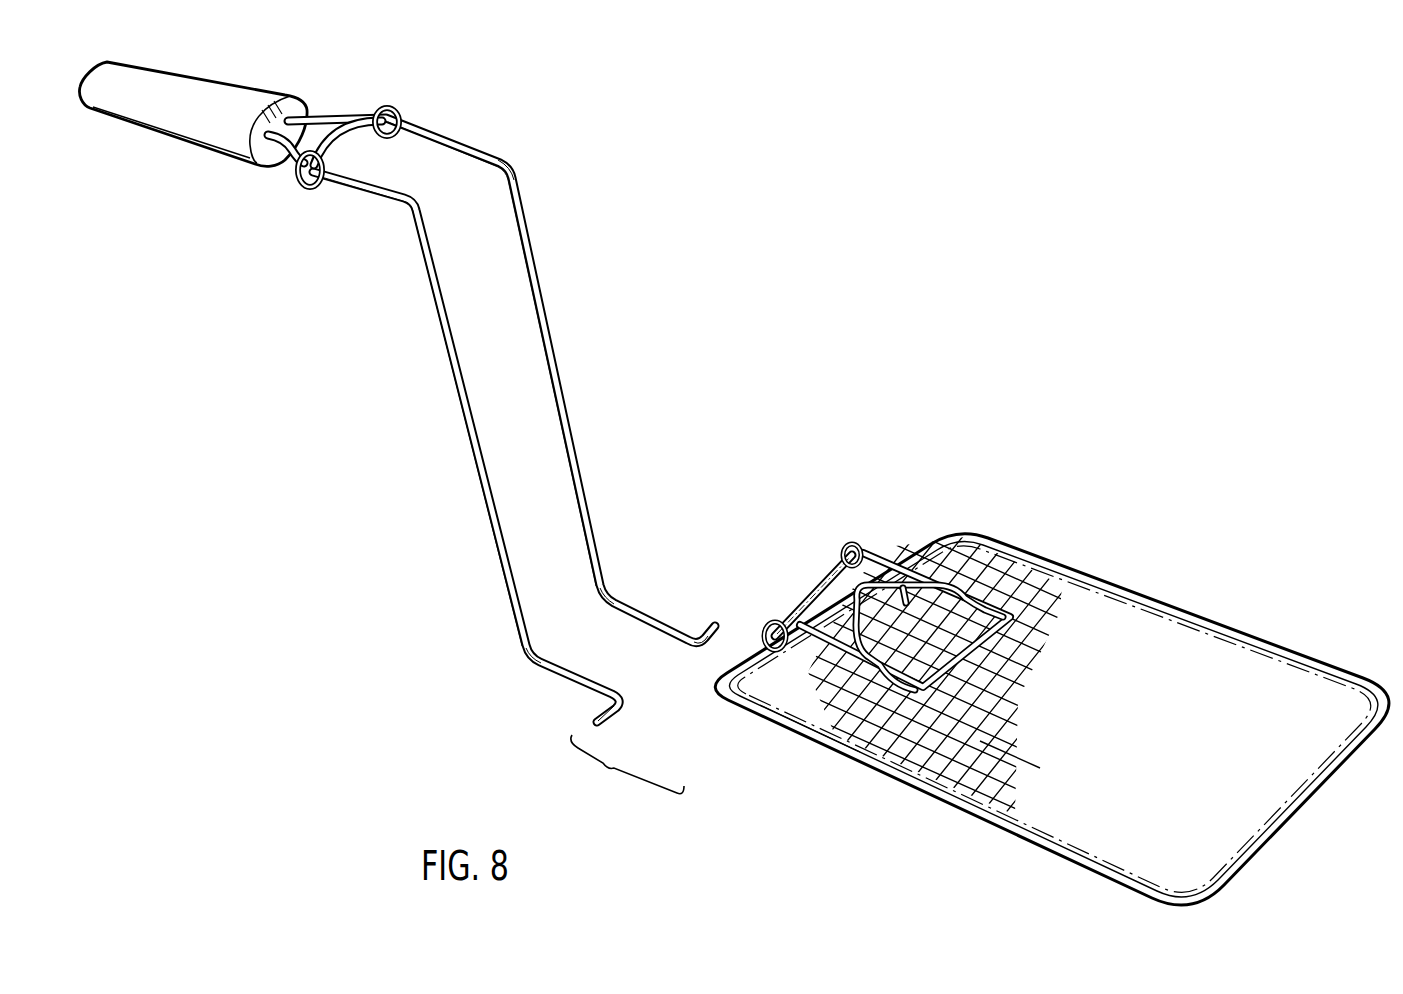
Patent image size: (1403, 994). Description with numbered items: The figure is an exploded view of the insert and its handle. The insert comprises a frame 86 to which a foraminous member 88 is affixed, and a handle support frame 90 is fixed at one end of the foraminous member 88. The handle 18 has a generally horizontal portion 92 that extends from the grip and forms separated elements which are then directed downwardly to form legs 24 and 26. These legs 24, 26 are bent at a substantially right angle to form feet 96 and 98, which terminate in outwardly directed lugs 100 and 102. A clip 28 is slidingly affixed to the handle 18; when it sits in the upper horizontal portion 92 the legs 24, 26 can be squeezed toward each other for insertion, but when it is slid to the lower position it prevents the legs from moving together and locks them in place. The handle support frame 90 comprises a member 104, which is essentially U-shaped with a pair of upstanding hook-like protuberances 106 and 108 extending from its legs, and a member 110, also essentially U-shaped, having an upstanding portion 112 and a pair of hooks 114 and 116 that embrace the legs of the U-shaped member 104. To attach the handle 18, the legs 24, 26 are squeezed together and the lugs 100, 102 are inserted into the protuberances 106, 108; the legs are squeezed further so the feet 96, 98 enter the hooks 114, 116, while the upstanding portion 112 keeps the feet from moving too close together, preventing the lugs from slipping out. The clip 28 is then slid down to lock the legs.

The handle 18 is at (212, 125).
The leg 24 is at (543, 313).
The leg 26 is at (463, 403).
The clip 28 is at (378, 128).
The portion 92 is at (513, 173).
The foot 96 is at (615, 600).
The foot 98 is at (538, 667).
The lug 100 is at (705, 622).
The lug 102 is at (587, 708).
The frame 86 is at (1133, 890).
The foraminous member 88 is at (940, 807).
The handle support frame 90 is at (968, 681).
The member 104 is at (905, 685).
The hook-like protuberance 106 is at (993, 540).
The hook-like protuberance 108 is at (810, 737).
The member 110 is at (918, 578).
The upstanding portion 112 is at (1004, 624).
The hook 114 is at (857, 546).
The hook 116 is at (784, 653).